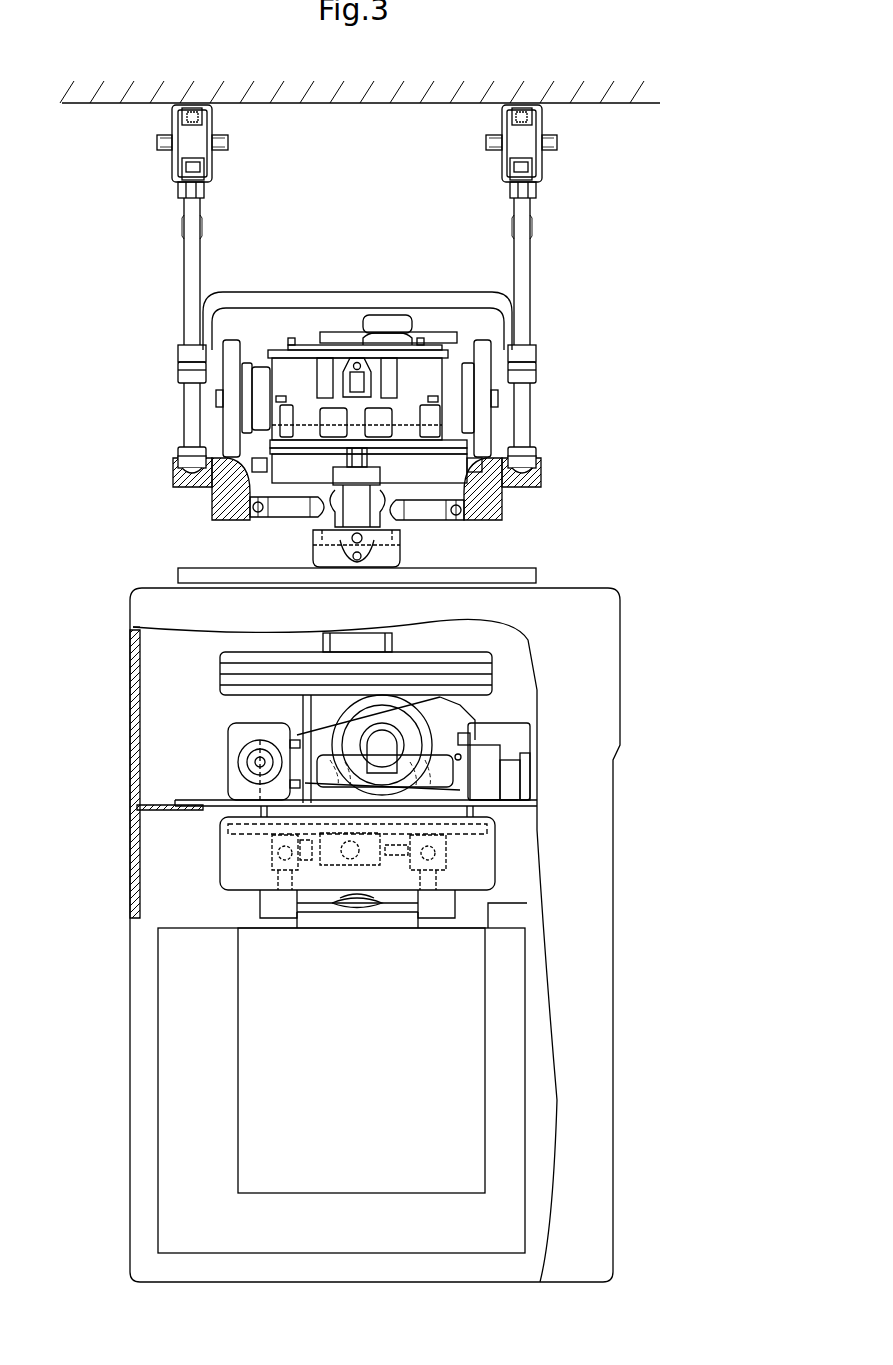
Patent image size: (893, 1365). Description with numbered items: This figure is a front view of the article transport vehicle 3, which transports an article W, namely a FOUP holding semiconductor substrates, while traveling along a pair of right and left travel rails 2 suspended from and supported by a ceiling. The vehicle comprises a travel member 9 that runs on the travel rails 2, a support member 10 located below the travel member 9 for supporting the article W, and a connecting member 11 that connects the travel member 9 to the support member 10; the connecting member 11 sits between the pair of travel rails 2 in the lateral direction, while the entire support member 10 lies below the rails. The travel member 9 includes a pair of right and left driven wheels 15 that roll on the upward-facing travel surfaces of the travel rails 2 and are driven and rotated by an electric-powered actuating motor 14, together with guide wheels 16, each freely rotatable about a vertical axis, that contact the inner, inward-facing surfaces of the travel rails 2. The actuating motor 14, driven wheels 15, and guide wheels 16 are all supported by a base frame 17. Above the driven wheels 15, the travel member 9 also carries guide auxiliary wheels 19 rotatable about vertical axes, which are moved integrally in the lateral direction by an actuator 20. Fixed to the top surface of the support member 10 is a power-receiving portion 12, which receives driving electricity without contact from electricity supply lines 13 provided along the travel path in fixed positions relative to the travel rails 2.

The travel rail 2 is at (192, 487).
The article transport vehicle 3 is at (657, 594).
The travel member 9 is at (304, 320).
The support member 10 is at (597, 670).
The connecting member 11 is at (393, 523).
The power-receiving portion 12 is at (308, 537).
The electricity supply line 13 is at (278, 515).
The actuating motor 14 is at (257, 380).
The driven wheel 15 is at (232, 422).
The guide wheel 16 is at (220, 490).
The base frame 17 is at (447, 438).
The guide auxiliary wheel 19 is at (387, 318).
The actuator 20 is at (345, 370).
The article W is at (193, 1155).